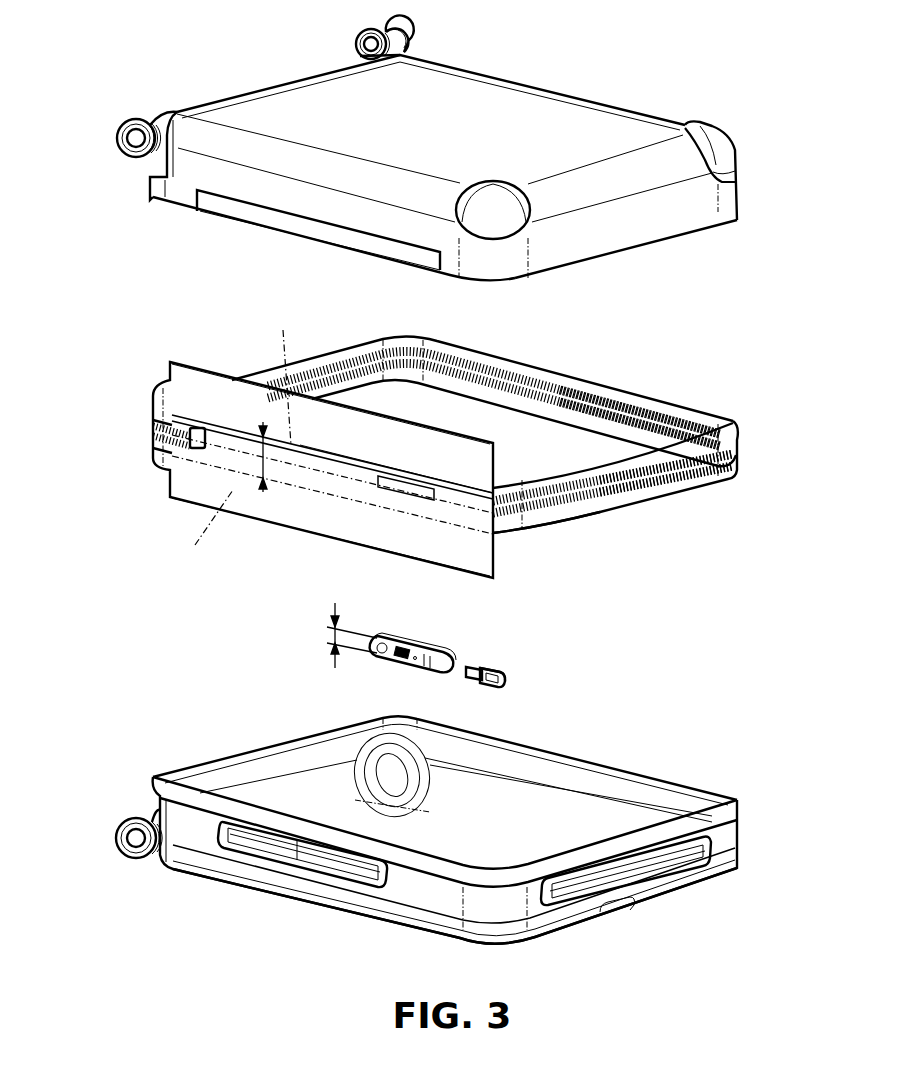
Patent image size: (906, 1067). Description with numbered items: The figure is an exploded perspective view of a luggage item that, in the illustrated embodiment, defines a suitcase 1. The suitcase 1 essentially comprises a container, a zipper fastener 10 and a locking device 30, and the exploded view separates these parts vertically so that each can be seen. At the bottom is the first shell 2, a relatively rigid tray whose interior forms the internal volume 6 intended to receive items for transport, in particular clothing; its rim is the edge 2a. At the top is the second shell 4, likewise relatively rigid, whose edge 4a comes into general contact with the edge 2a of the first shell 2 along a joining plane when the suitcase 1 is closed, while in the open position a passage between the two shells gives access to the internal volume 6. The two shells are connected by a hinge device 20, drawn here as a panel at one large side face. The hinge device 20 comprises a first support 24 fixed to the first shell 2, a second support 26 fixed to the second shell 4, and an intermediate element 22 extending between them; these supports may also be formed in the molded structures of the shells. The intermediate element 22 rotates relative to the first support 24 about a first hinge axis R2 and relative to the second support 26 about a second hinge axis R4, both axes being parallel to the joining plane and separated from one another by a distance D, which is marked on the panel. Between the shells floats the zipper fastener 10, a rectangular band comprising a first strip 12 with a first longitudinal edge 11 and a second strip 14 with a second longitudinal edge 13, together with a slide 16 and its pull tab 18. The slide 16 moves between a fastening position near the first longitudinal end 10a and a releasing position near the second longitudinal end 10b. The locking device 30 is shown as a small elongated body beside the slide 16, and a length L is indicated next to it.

The suitcase 1 is at (142, 962).
The first shell 2 is at (206, 833).
The edge of the first shell 2a is at (640, 828).
The second shell 4 is at (300, 105).
The edge of the second shell 4a is at (662, 244).
The internal volume 6 is at (443, 814).
The zipper fastener 10 is at (765, 440).
The first longitudinal end 10a is at (186, 450).
The second longitudinal end 10b is at (441, 524).
The first longitudinal edge 11 is at (660, 477).
The first strip 12 is at (617, 503).
The second longitudinal edge 13 is at (668, 462).
The second strip 14 is at (622, 462).
The slide 16 is at (505, 686).
The pull tab 18 is at (470, 672).
The hinge device 20 is at (168, 528).
The intermediate element 22 is at (333, 470).
The first support 24 is at (262, 505).
The second support 26 is at (214, 392).
The locking device 30 is at (437, 641).
The distance between hinge axes D is at (263, 443).
The length L is at (352, 652).
The first hinge axis R2 is at (203, 530).
The second hinge axis R4 is at (283, 375).